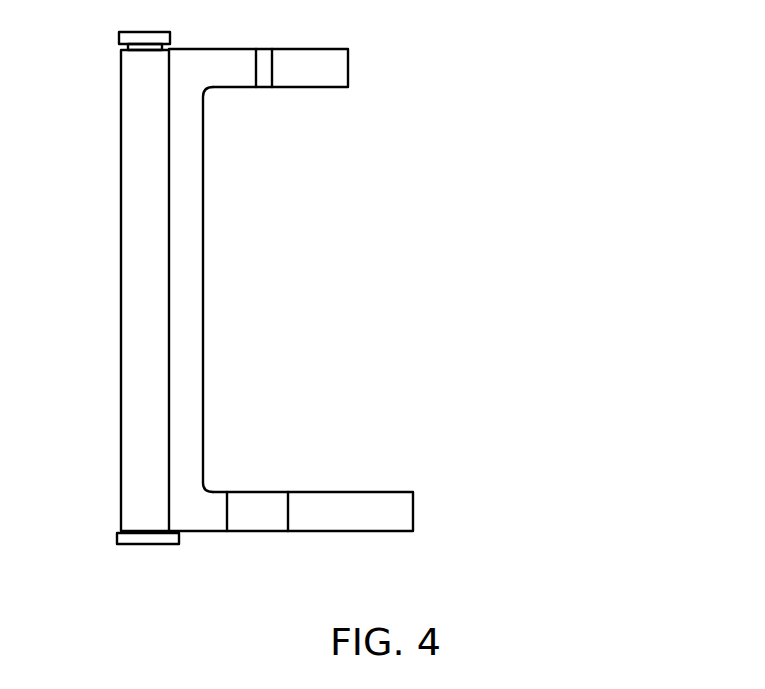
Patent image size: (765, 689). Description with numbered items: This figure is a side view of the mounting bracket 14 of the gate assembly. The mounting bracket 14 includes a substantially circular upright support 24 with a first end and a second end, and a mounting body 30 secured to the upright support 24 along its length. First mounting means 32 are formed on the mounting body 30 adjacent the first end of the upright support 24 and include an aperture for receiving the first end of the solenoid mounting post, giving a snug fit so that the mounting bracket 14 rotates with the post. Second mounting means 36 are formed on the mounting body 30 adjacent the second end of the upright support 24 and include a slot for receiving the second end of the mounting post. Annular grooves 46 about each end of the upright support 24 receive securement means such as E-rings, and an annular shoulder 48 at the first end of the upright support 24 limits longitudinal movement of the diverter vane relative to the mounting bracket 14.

The mounting bracket 14 is at (326, 284).
The upright support 24 is at (132, 267).
The mounting body 30 is at (192, 228).
The first mounting means 32 is at (388, 512).
The second mounting means 36 is at (335, 70).
The annular grooves 46 is at (162, 48).
The annular shoulder 48 is at (149, 546).